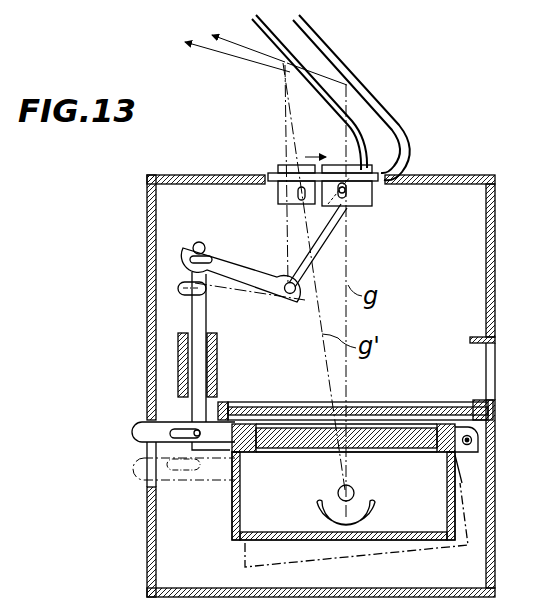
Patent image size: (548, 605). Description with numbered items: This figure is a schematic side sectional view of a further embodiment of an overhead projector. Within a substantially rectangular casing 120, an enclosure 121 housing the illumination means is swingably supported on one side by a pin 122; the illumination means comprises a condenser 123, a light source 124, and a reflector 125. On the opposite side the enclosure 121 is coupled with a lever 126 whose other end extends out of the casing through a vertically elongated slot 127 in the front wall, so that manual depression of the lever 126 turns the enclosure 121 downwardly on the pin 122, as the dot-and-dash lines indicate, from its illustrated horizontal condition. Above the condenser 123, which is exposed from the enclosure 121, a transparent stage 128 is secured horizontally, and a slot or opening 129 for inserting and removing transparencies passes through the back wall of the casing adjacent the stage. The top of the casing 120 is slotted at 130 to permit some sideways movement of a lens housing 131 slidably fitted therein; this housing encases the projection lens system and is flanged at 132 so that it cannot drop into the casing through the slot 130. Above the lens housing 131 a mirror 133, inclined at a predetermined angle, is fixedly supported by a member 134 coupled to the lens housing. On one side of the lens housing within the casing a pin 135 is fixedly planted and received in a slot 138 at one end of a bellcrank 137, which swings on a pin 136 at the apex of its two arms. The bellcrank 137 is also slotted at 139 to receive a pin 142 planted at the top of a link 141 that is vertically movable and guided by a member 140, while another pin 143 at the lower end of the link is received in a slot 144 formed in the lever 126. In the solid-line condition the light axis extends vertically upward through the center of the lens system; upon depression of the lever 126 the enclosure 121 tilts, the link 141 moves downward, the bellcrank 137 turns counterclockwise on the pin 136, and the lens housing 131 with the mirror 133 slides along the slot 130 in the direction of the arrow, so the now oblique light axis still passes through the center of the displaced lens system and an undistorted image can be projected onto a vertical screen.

The casing 120 is at (492, 232).
The enclosure 121 is at (430, 543).
The pin 122 is at (472, 440).
The condenser 123 is at (405, 442).
The light source 124 is at (338, 490).
The reflector 125 is at (374, 506).
The lever 126 is at (140, 422).
The vertically elongated slot 127 is at (140, 487).
The transparent stage 128 is at (425, 408).
The slot or opening 129 is at (480, 355).
The slot 130 is at (265, 178).
The lens housing 131 is at (372, 206).
The flange 132 is at (358, 167).
The mirror 133 is at (330, 57).
The member 134 is at (405, 150).
The pin 135 is at (346, 232).
The pin 136 is at (291, 294).
The bellcrank 137 is at (268, 292).
The slot 138 is at (348, 192).
The slot 139 is at (183, 262).
The member 140 is at (218, 366).
The link 141 is at (180, 362).
The pin 142 is at (205, 252).
The pin 143 is at (202, 445).
The slot 144 is at (143, 442).